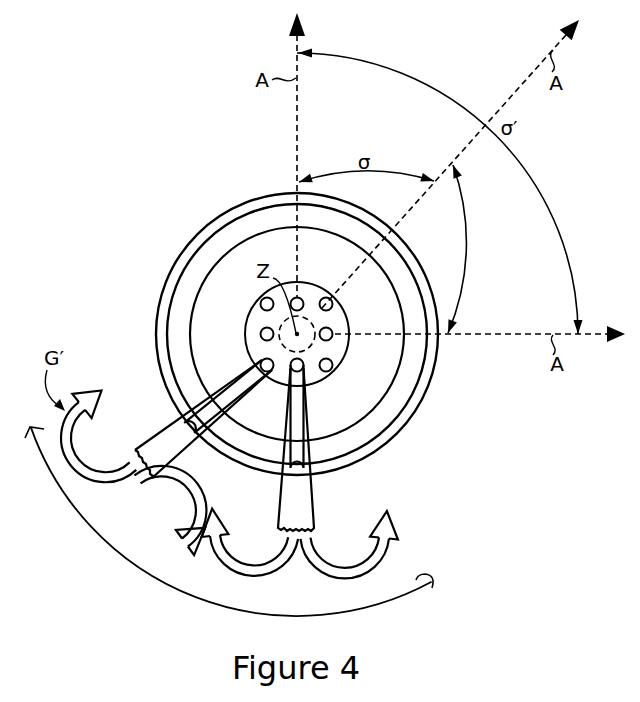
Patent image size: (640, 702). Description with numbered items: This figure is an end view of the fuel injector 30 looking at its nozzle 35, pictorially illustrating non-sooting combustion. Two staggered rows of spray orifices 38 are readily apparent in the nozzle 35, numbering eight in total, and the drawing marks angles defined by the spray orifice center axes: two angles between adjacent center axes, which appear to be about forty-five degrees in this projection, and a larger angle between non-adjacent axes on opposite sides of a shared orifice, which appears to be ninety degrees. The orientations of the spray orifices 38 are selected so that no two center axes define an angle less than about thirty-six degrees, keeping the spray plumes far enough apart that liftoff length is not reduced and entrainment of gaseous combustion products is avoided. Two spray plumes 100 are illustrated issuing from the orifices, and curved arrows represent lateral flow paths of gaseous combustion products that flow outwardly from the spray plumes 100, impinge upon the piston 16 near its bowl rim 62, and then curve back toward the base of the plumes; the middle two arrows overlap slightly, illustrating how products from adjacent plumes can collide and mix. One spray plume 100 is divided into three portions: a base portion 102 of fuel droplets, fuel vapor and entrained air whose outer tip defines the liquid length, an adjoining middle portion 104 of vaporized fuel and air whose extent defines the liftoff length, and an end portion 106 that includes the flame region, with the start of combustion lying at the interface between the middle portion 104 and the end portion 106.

The piston 16 is at (356, 617).
The fuel injector 30 is at (189, 239).
The nozzle 35 is at (377, 387).
The spray orifices 38 is at (303, 297).
The bowl rim 62 is at (128, 567).
The spray plumes 100 is at (258, 438).
The base portion 102 is at (258, 366).
The middle portion 104 is at (217, 419).
The end portion 106 is at (189, 453).